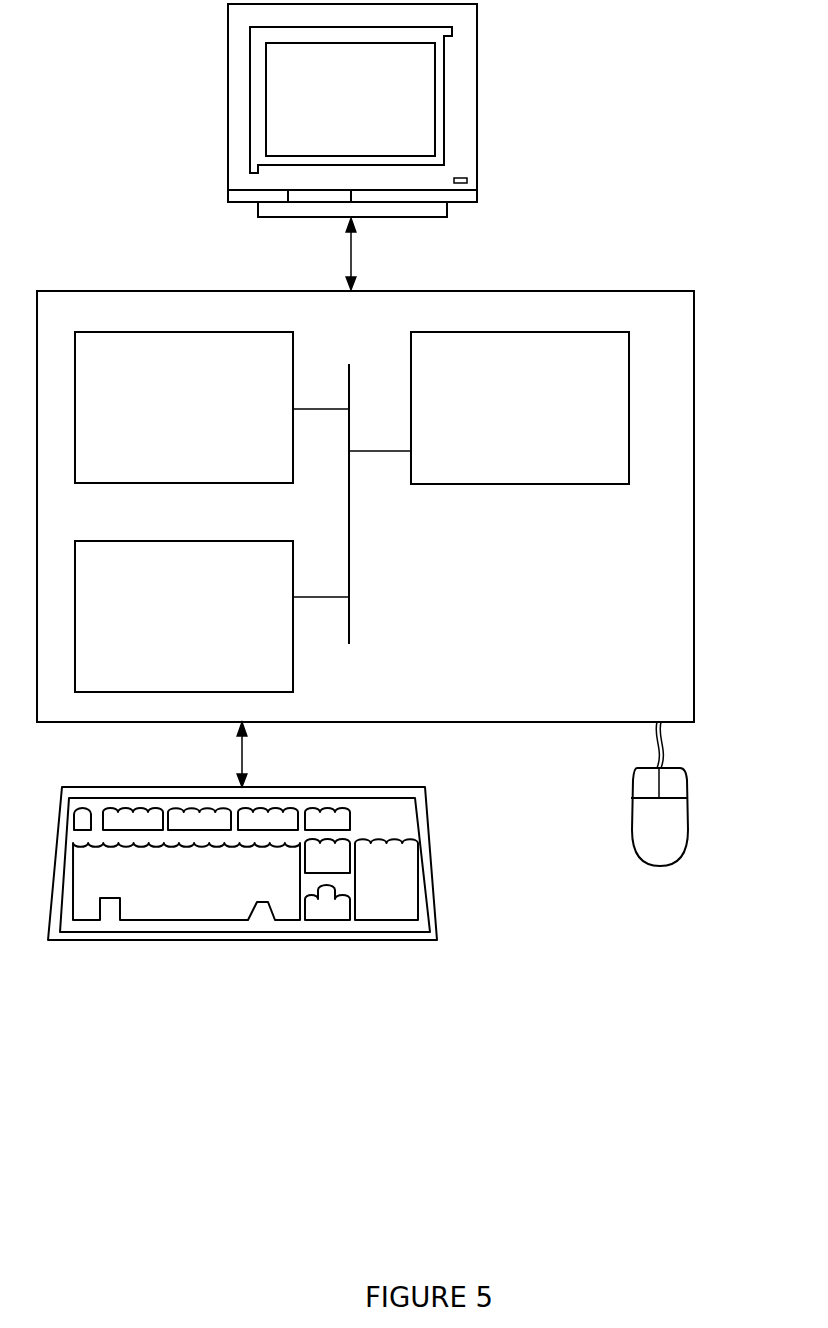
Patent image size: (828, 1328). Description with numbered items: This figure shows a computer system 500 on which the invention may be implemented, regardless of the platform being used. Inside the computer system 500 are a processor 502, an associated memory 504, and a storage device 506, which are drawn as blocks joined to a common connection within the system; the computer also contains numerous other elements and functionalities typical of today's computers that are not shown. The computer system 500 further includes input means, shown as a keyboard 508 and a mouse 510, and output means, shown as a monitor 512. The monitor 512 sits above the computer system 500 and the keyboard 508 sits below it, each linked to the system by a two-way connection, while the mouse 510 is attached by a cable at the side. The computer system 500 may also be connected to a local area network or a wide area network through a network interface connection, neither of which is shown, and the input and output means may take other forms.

The computer system 500 is at (673, 165).
The processor 502 is at (518, 419).
The memory 504 is at (166, 417).
The storage device 506 is at (163, 629).
The keyboard 508 is at (158, 901).
The mouse 510 is at (639, 839).
The monitor 512 is at (332, 113).